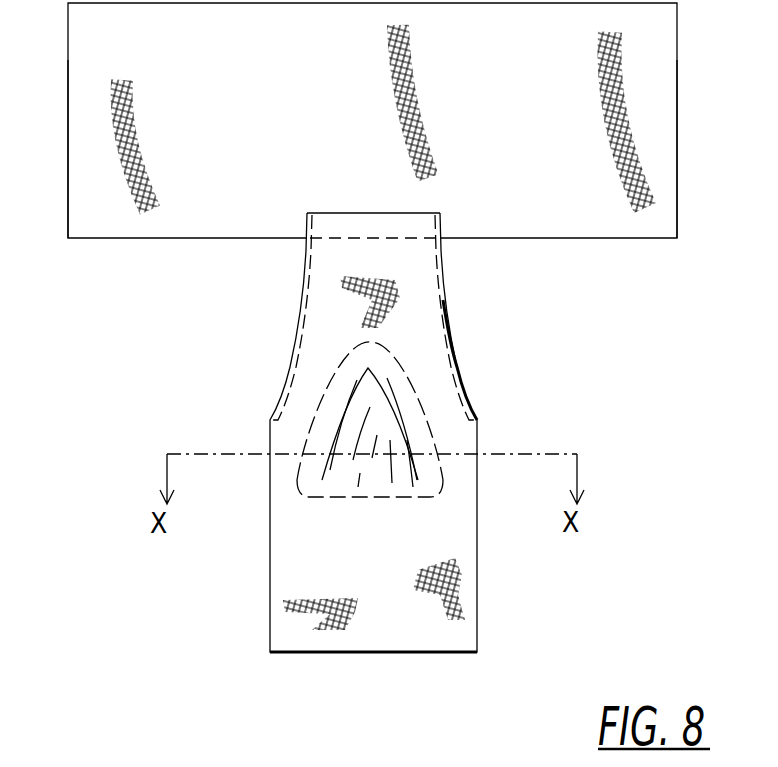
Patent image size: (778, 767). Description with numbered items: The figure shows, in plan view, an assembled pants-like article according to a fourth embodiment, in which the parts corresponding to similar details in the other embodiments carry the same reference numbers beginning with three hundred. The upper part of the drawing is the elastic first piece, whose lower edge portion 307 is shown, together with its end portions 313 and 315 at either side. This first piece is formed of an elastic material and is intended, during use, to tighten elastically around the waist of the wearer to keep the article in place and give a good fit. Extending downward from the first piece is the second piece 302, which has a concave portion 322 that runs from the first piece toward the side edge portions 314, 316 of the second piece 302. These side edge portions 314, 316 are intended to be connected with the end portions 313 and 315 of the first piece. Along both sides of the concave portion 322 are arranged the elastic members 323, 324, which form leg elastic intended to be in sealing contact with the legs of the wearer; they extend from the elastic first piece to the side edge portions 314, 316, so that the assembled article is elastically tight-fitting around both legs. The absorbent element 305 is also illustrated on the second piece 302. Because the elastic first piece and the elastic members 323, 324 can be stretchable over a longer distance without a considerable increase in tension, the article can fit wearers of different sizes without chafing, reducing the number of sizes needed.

The second piece 302 is at (442, 652).
The absorbent element 305 is at (377, 437).
The lower edge portion 307 is at (620, 227).
The end portion 313 is at (66, 200).
The side edge portion 314 is at (270, 610).
The end portion 315 is at (678, 200).
The side edge portion 316 is at (477, 603).
The concave portion 322 is at (447, 328).
The elastic member 323 is at (310, 305).
The elastic member 324 is at (440, 288).